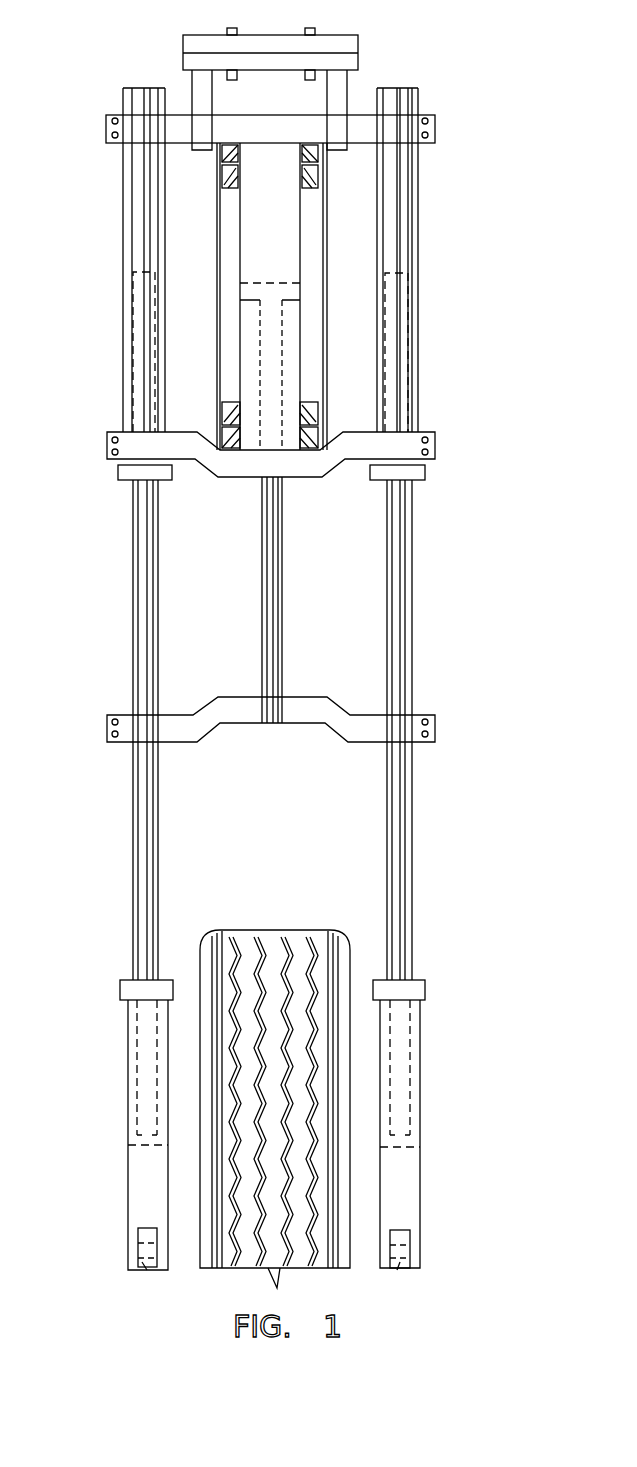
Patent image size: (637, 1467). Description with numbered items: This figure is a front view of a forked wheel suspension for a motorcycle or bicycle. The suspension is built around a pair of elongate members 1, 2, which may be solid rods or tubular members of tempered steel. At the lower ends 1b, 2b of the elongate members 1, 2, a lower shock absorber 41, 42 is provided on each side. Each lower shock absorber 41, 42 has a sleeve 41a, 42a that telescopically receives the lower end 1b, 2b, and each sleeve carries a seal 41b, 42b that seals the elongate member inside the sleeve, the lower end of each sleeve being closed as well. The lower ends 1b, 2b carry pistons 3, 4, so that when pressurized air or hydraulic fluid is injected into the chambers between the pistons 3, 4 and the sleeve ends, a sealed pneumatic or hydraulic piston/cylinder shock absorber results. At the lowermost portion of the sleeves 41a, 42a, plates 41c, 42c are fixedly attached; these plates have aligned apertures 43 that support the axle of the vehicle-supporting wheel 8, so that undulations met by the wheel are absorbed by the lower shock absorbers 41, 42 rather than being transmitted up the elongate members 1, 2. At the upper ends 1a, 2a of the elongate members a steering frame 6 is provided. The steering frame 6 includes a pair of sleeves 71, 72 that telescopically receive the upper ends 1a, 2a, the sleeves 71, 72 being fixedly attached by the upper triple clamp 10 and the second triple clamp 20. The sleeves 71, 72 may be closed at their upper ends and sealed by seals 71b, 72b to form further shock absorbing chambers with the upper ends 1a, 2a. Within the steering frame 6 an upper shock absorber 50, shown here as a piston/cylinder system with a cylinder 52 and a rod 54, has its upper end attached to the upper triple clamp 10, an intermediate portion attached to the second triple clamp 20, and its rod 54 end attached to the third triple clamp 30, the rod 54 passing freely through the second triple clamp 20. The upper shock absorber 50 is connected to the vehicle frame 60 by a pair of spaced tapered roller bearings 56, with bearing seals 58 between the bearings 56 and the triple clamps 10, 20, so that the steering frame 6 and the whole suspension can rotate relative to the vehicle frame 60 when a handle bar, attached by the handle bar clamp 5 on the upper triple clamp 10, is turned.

The handle bar clamp 5 is at (200, 35).
The upper triple clamp 10 is at (435, 129).
The second triple clamp 20 is at (435, 445).
The third triple clamp 30 is at (435, 730).
The sleeve 72 is at (123, 224).
The sleeve 71 is at (418, 197).
The upper end of elongate member 2a is at (133, 332).
The upper end of elongate member 1a is at (420, 360).
The seal 72b is at (118, 472).
The seal 71b is at (425, 478).
The elongate member 2 is at (133, 597).
The elongate member 1 is at (410, 615).
The rod 54 is at (282, 568).
The upper shock absorber 50 is at (302, 270).
The cylinder 52 is at (240, 247).
The vehicle frame 60 is at (217, 335).
The tapered roller bearings 56 is at (228, 185).
The bearing seals 58 is at (230, 150).
The steering frame 6 is at (450, 277).
The vehicle-supporting wheel 8 is at (280, 930).
The lower end of elongate member 2b is at (133, 945).
The lower end of elongate member 1b is at (412, 938).
The seal 42b is at (120, 988).
The seal 41b is at (425, 990).
The lower shock absorber 42 is at (128, 1071).
The lower shock absorber 41 is at (420, 1057).
The piston 4 is at (128, 1129).
The piston 3 is at (393, 1150).
The sleeve 42a is at (128, 1188).
The sleeve 41a is at (420, 1195).
The plate 42c is at (138, 1237).
The plate 41c is at (410, 1238).
The aligned apertures 43 is at (146, 1268).